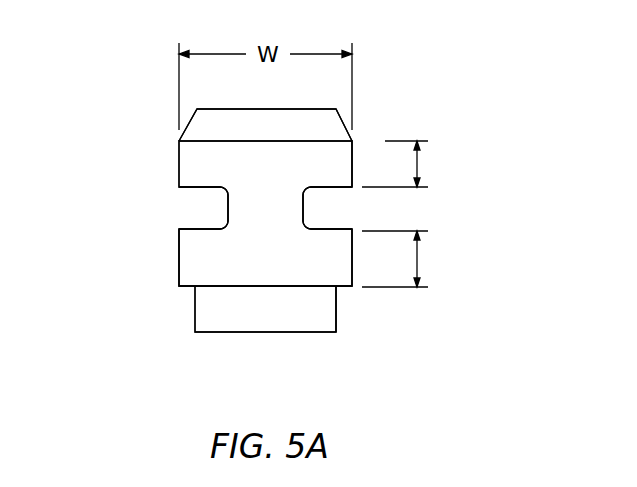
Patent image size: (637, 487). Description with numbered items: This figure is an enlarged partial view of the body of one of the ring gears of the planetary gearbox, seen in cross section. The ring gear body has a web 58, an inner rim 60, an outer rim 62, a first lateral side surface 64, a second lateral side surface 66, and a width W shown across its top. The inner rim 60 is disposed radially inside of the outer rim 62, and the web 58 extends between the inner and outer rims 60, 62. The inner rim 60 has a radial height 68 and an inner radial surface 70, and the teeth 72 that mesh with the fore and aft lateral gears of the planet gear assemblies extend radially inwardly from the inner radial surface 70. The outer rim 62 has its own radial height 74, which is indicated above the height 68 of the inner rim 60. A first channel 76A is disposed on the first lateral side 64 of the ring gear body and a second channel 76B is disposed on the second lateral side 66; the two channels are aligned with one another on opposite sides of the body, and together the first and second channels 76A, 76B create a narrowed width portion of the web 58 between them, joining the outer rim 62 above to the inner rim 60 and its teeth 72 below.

The web 58 is at (131, 209).
The inner rim 60 is at (178, 265).
The outer rim 62 is at (178, 170).
The first lateral side surface 64 is at (177, 152).
The second lateral side surface 66 is at (353, 166).
The radial height of the inner rim 68 is at (418, 258).
The inner radial surface 70 is at (343, 288).
The teeth 72 is at (254, 333).
The radial height of the outer rim 74 is at (418, 165).
The first channel 76A is at (200, 213).
The second channel 76B is at (332, 206).